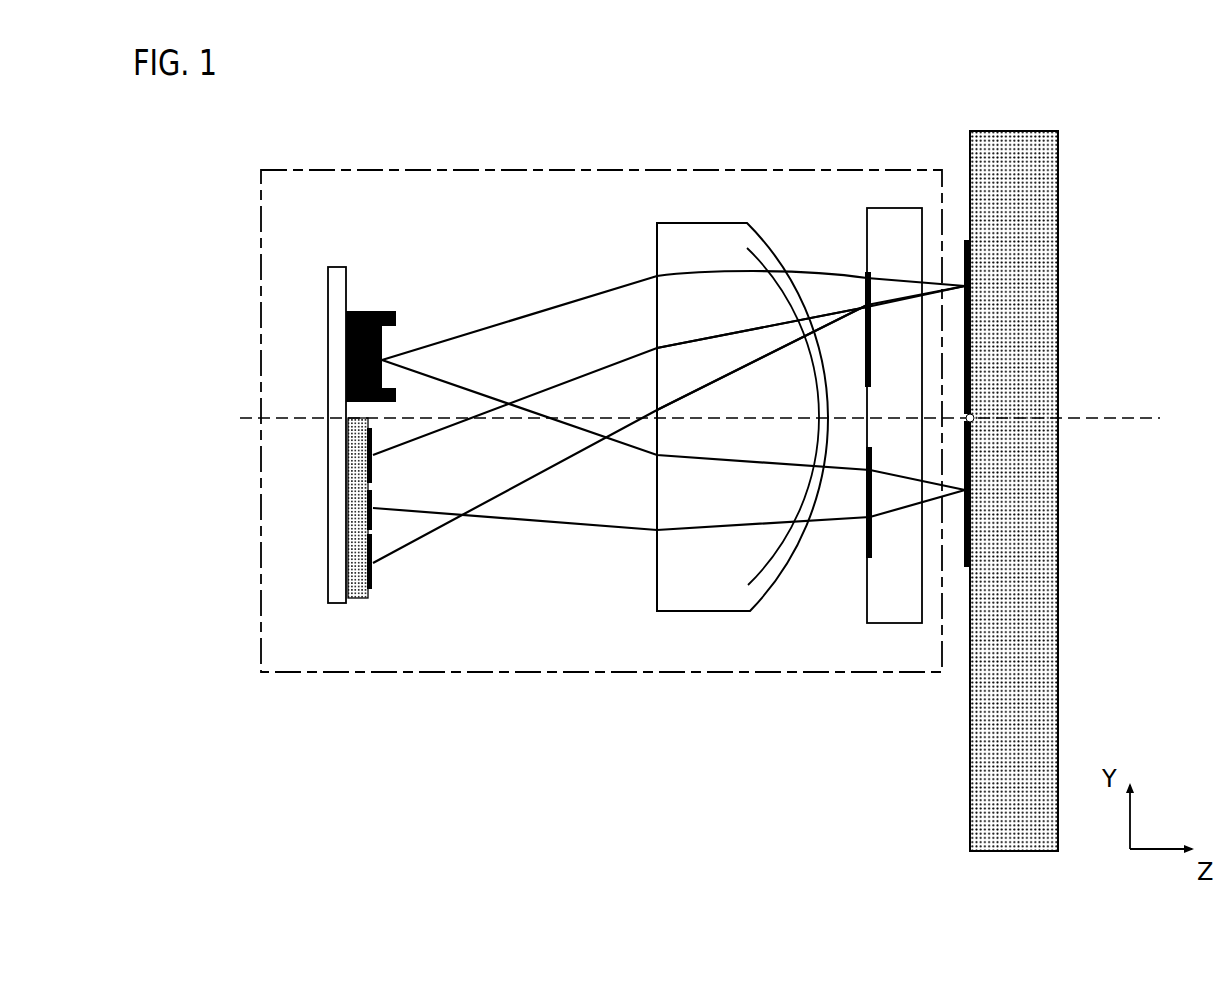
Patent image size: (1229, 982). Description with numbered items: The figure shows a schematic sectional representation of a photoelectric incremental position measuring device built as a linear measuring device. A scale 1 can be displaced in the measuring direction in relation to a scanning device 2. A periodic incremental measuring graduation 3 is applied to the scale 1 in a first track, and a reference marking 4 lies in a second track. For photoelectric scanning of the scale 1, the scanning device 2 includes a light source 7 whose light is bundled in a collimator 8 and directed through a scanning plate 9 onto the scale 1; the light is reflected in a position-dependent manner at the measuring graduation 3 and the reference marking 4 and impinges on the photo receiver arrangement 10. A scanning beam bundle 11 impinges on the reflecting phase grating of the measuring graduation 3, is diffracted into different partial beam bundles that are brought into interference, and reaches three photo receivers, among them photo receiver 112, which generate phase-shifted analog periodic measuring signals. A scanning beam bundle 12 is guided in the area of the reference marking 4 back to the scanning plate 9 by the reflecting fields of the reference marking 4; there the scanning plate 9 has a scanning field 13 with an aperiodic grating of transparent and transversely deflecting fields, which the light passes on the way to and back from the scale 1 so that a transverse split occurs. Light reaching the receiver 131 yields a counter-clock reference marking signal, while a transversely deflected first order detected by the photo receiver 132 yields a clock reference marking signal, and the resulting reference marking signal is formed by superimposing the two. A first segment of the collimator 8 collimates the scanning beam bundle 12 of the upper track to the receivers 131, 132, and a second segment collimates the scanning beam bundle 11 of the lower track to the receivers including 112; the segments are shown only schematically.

The scale 1 is at (1031, 189).
The scanning device 2 is at (412, 170).
The measuring graduation 3 is at (968, 527).
The reference marking 4 is at (968, 340).
The light source 7 is at (373, 311).
The collimator 8 is at (690, 236).
The scanning plate 9 is at (890, 221).
The photo receiver arrangement 10 is at (358, 590).
The scanning beam bundle 11 is at (900, 474).
The scanning beam bundle 12 is at (870, 270).
The scanning field 13 is at (866, 302).
The photo receiver 112 is at (373, 517).
The photo receiver 131 is at (373, 461).
The photo receiver 132 is at (373, 570).